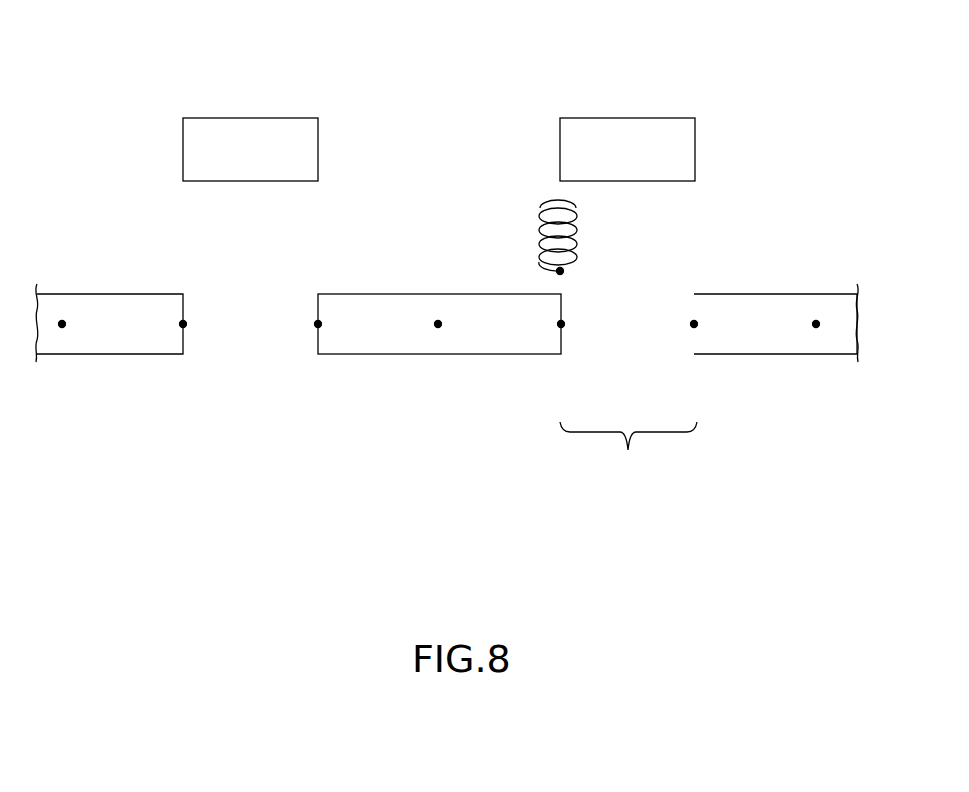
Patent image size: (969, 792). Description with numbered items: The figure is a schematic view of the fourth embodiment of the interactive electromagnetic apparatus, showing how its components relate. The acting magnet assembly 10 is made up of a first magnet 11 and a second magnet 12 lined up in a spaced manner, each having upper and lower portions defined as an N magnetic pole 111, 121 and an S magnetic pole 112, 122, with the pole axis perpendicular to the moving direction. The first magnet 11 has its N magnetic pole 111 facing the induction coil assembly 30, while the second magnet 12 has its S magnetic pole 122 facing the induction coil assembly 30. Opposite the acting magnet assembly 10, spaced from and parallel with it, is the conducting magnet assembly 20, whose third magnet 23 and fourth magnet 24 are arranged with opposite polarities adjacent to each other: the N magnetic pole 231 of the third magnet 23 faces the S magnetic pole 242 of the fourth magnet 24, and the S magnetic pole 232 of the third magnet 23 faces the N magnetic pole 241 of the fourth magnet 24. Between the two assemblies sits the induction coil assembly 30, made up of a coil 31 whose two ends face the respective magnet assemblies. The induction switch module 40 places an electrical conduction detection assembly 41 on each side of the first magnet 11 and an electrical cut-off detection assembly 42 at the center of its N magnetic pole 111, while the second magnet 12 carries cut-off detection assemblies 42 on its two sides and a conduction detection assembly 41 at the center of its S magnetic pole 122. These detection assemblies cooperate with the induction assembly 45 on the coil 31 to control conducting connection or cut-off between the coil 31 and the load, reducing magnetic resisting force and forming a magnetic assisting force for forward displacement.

The acting magnet assembly 10 is at (91, 452).
The first magnet 11 is at (384, 350).
The N magnetic pole 111 is at (440, 294).
The S magnetic pole 112 is at (442, 355).
The second magnet 12 is at (118, 348).
The N magnetic pole 121 is at (64, 356).
The S magnetic pole 122 is at (62, 294).
The conducting magnet assembly 20 is at (196, 84).
The third magnet 23 is at (250, 118).
The N magnetic pole 231 is at (183, 147).
The S magnetic pole 232 is at (319, 148).
The fourth magnet 24 is at (628, 118).
The N magnetic pole 241 is at (696, 148).
The S magnetic pole 242 is at (560, 148).
The induction coil assembly 30 is at (496, 219).
The coil 31 is at (578, 231).
The induction switch module 40 is at (628, 456).
The electrical conduction detection assembly 41 is at (64, 323).
The electrical cut-off detection assembly 42 is at (184, 325).
The induction assembly 45 is at (562, 273).